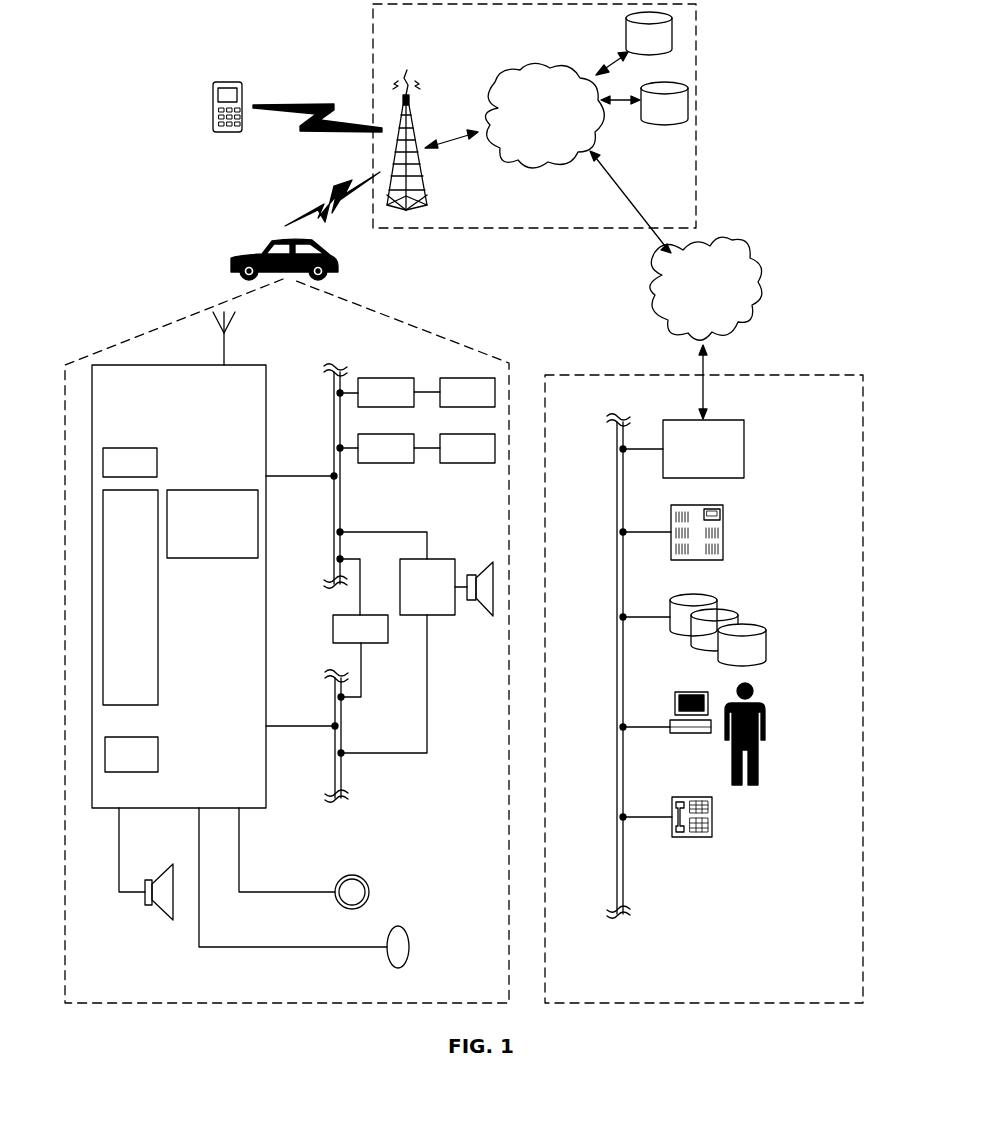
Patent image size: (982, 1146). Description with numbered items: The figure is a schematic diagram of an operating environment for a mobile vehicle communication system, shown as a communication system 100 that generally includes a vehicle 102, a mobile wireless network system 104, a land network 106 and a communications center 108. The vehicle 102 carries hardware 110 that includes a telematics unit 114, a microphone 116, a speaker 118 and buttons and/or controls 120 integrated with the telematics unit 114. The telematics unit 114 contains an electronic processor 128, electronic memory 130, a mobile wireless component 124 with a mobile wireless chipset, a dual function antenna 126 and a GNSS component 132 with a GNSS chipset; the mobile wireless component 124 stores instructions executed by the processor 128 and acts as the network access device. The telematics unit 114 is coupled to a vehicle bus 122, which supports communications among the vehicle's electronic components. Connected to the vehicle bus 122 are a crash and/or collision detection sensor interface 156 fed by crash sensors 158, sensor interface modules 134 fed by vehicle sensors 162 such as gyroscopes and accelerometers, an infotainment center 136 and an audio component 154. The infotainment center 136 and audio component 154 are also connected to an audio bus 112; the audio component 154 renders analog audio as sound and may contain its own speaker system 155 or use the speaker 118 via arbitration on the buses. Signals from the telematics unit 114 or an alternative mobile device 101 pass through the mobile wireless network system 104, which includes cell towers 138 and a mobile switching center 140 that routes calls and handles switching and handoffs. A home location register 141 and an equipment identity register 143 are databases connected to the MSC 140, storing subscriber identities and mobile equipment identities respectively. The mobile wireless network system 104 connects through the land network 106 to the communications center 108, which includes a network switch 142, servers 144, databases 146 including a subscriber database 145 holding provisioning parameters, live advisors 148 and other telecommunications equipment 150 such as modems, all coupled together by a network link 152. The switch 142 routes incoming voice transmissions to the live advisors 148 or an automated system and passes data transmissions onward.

The communication system 100 is at (177, 16).
The mobile device 101 is at (211, 88).
The vehicle 102 is at (238, 255).
The mobile wireless network system 104 is at (560, 224).
The land network 106 is at (706, 288).
The communications center 108 is at (813, 972).
The hardware 110 is at (434, 1000).
The audio bus 112 is at (333, 773).
The telematics unit 114 is at (247, 792).
The microphone 116 is at (403, 927).
The speaker 118 is at (160, 912).
The buttons and/or controls 120 is at (350, 875).
The vehicle bus 122 is at (341, 518).
The mobile wireless component 124 is at (130, 462).
The dual function antenna 126 is at (226, 356).
The electronic processor 128 is at (130, 597).
The electronic memory 130 is at (131, 754).
The GNSS component 132 is at (212, 524).
The sensor interface modules 134 is at (386, 448).
The infotainment center 136 is at (360, 629).
The cell towers 138 is at (411, 100).
The mobile switching center 140 is at (545, 115).
The home location register 141 is at (649, 33).
The network switch 142 is at (703, 449).
The equipment identity register 143 is at (664, 103).
The servers 144 is at (724, 520).
The subscriber database 145 is at (722, 610).
The databases 146 is at (766, 636).
The live advisors 148 is at (757, 703).
The telecommunications equipment 150 is at (712, 818).
The network link 152 is at (617, 665).
The audio component 154 is at (427, 587).
The speaker system 155 is at (488, 613).
The crash and/or collision detection sensor interface 156 is at (386, 392).
The crash sensors 158 is at (454, 392).
The vehicle sensors 162 is at (454, 448).